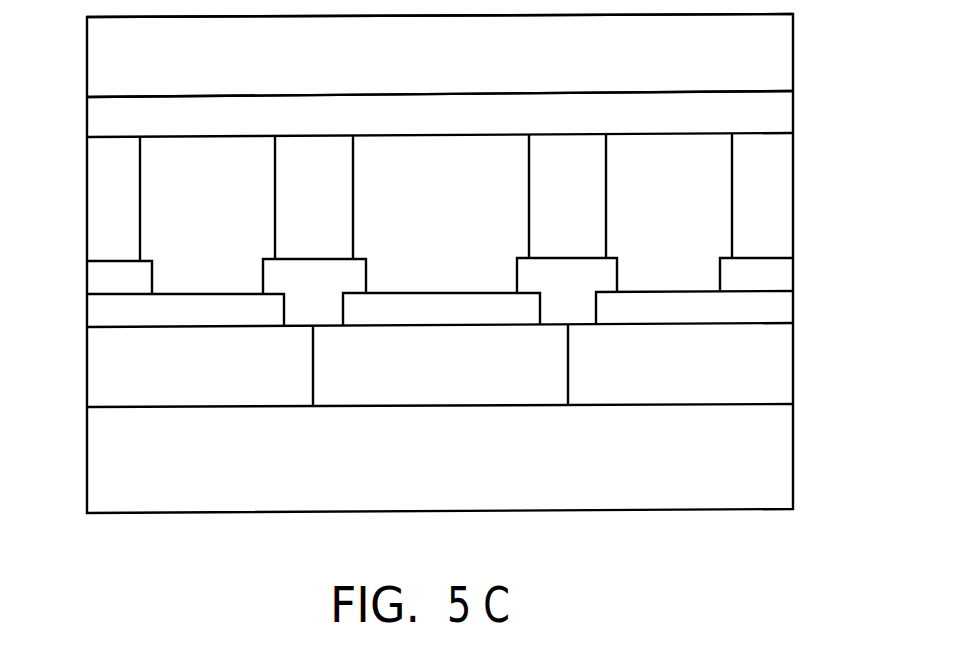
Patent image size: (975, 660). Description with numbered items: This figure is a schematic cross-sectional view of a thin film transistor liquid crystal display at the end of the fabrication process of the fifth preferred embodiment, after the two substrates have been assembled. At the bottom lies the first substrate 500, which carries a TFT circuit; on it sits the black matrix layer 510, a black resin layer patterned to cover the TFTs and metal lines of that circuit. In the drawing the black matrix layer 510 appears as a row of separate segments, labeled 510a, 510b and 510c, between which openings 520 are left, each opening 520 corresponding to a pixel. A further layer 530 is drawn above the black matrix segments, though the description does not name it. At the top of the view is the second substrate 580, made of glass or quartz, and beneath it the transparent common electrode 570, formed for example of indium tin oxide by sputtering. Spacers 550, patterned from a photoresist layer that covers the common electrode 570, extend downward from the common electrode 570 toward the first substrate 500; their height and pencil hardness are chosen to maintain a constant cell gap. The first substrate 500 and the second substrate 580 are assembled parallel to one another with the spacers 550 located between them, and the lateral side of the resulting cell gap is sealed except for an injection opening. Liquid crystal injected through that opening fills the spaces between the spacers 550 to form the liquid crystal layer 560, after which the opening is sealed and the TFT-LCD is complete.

The first substrate 500 is at (671, 478).
The black matrix layer 510 is at (810, 383).
The first conductive region 510a is at (255, 388).
The second conductive region 510b is at (480, 390).
The third conductive region 510c is at (688, 389).
The openings 520 is at (103, 304).
The second insulating layer pattern 530 is at (103, 275).
The spacers 550 is at (106, 200).
The liquid crystal layer 560 is at (183, 195).
The common electrode 570 is at (773, 111).
The second substrate 580 is at (773, 48).